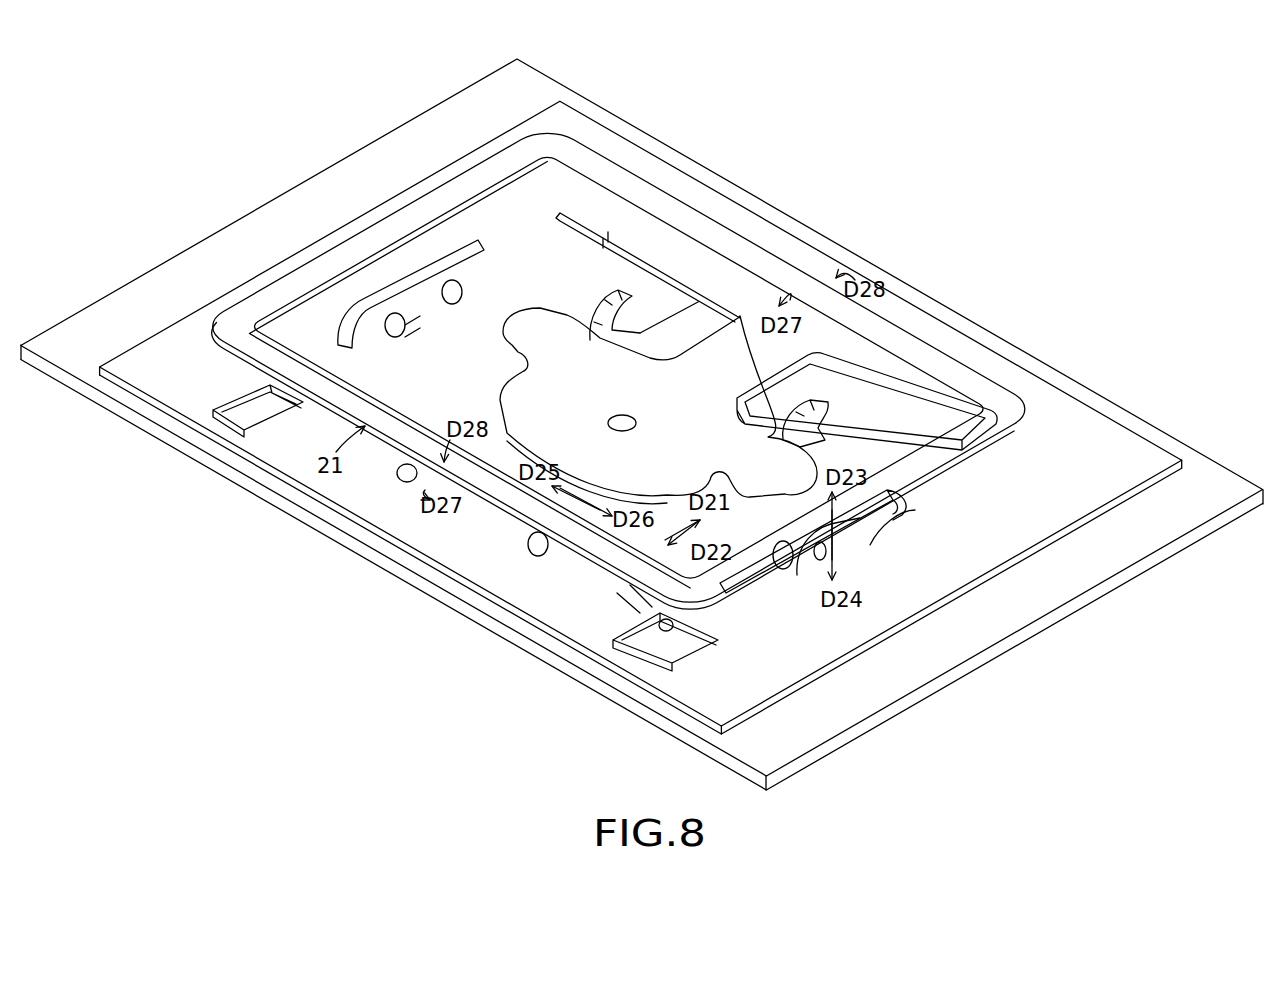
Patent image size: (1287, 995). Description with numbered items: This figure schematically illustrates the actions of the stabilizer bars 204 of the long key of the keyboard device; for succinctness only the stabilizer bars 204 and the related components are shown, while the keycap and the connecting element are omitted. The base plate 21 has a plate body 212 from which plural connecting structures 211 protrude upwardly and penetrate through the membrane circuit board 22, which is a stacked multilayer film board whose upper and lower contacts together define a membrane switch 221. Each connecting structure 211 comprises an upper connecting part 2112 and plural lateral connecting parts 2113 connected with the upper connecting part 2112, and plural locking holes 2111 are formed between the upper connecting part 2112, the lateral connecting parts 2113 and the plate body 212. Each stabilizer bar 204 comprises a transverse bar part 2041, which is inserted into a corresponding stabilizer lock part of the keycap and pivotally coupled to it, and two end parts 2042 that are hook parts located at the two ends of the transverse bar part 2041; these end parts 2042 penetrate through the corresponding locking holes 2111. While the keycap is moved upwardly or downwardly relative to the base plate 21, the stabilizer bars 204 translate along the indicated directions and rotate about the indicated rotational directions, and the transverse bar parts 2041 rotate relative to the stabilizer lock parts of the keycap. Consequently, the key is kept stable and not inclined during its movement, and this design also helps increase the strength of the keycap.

The base plate 21 is at (1208, 478).
The plate body 212 is at (1122, 548).
The membrane circuit board 22 is at (646, 417).
The membrane switch 221 is at (625, 420).
The stabilizer bar 204 is at (618, 372).
The transverse bar part 2041 is at (752, 258).
The end part 2042 is at (455, 290).
The connecting structure 211 is at (396, 268).
The locking hole 2111 is at (480, 250).
The upper connecting part 2112 is at (448, 255).
The lateral connecting part 2113 is at (490, 268).